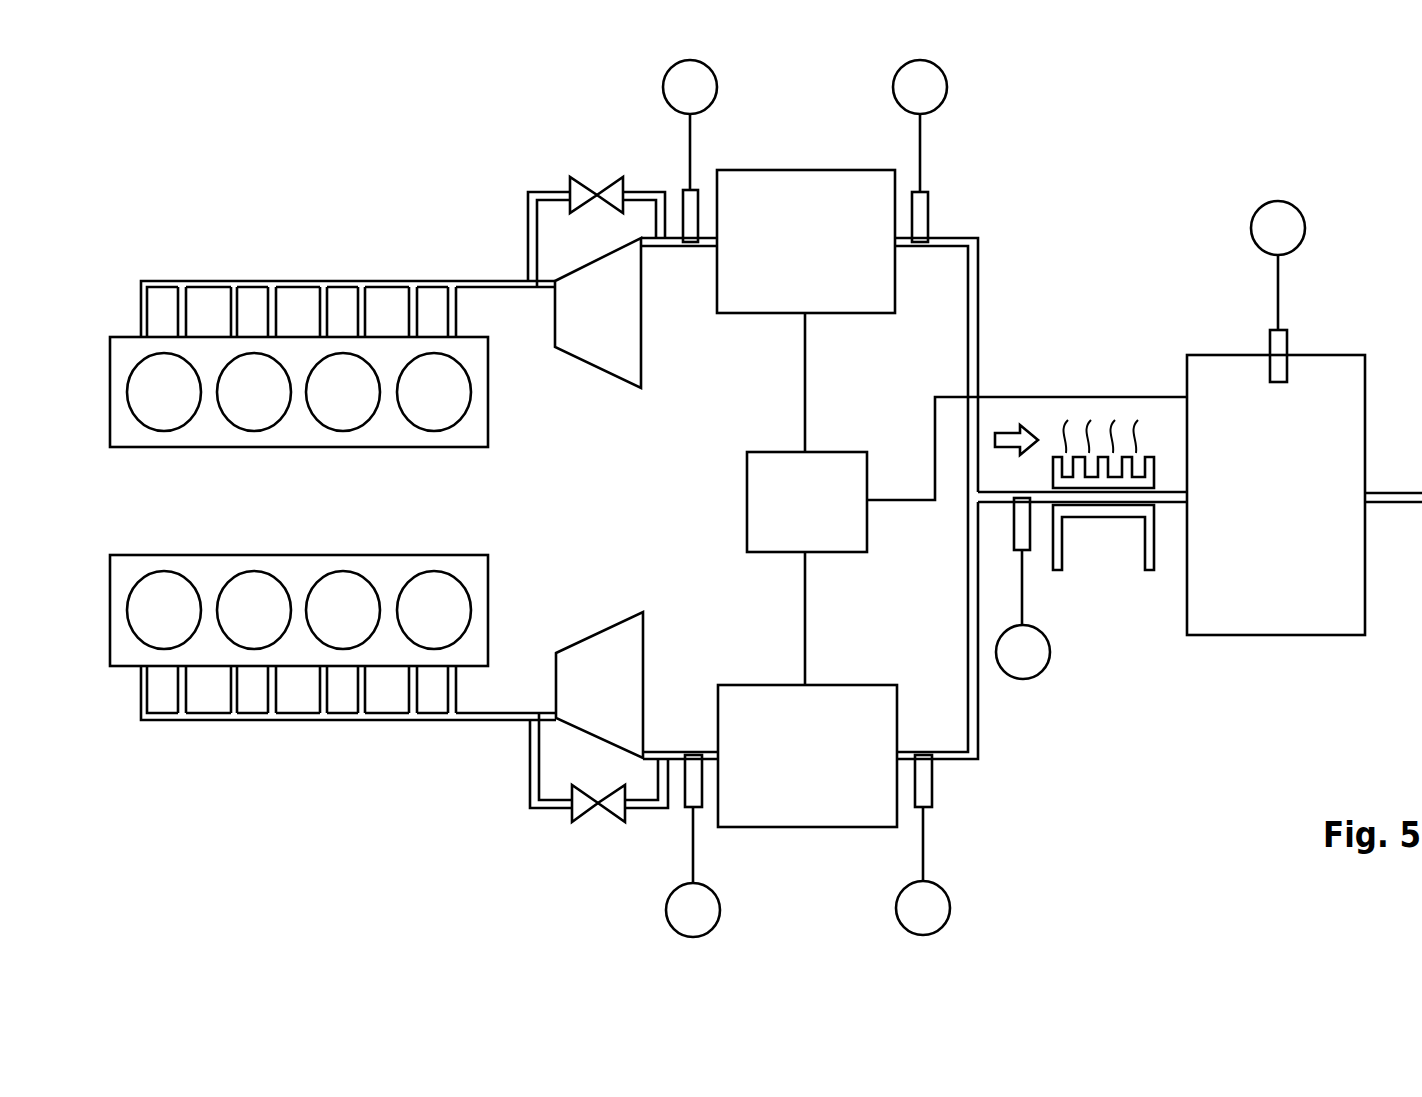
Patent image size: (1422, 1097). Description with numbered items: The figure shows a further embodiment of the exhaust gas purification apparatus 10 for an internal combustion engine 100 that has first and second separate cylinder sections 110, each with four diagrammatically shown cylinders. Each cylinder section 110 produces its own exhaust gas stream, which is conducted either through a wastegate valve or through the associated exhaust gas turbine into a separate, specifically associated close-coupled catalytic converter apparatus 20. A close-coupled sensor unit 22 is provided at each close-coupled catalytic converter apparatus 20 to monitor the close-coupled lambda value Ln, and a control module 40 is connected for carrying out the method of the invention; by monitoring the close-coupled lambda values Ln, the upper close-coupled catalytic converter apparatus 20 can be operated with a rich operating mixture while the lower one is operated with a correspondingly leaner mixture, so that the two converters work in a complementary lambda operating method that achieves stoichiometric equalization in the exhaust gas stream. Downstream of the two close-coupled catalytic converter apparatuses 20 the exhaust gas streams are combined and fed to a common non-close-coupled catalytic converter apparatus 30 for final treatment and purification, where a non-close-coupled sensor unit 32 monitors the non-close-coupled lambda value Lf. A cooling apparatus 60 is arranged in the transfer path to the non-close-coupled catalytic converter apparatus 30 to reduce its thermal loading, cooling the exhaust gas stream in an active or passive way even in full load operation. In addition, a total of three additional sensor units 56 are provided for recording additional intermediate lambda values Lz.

The internal combustion engine 100 is at (226, 130).
The exhaust gas purification apparatus 10 is at (1352, 147).
The cylinder section 110 is at (122, 335).
The close-coupled catalytic converter apparatus 20 is at (808, 170).
The close-coupled sensor unit 22 is at (688, 190).
The additional sensor unit 56 is at (930, 215).
The control module 40 is at (747, 497).
The cooling apparatus 60 is at (1095, 522).
The non-close-coupled sensor unit 32 is at (1290, 343).
The non-close-coupled catalytic converter apparatus 30 is at (1265, 637).
The close-coupled lambda value Ln is at (663, 87).
The intermediate lambda value Lz is at (947, 87).
The non-close-coupled lambda value Lf is at (1278, 201).